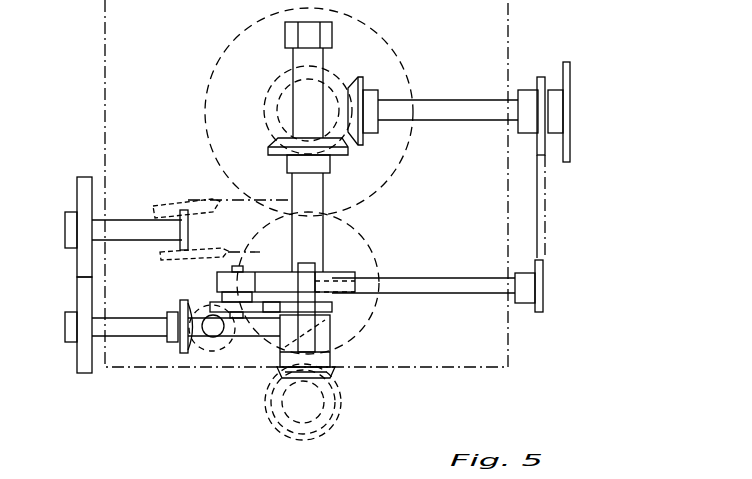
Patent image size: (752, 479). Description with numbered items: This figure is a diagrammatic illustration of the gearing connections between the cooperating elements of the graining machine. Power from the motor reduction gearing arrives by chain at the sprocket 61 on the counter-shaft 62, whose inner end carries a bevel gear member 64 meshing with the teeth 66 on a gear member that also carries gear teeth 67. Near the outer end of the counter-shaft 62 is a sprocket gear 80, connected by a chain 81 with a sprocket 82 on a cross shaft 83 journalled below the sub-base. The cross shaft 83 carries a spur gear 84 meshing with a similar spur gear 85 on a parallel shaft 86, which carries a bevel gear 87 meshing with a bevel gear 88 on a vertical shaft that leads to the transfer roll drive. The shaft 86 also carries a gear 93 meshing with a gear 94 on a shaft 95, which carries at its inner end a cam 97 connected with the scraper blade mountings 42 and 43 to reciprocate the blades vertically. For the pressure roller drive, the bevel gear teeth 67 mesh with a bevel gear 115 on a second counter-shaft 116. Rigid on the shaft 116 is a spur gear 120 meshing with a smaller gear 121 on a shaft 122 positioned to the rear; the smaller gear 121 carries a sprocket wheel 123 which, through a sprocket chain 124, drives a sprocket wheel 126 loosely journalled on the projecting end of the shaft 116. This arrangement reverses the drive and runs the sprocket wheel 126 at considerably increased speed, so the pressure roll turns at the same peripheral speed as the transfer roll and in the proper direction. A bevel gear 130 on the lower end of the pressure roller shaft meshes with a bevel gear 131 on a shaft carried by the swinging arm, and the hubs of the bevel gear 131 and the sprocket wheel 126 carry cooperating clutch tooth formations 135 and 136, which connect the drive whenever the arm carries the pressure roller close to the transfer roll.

The scraper blade mounting 42 is at (175, 208).
The scraper blade mounting 43 is at (160, 256).
The sprocket 61 is at (571, 80).
The counter-shaft 62 is at (440, 104).
The bevel gear member 64 is at (360, 78).
The teeth 66 is at (337, 69).
The gear teeth 67 is at (267, 107).
The sprocket gear 80 is at (542, 80).
The chain 81 is at (546, 197).
The sprocket 82 is at (543, 288).
The cross shaft 83 is at (448, 293).
The spur gear 84 is at (317, 273).
The spur gear 85 is at (317, 337).
The shaft 86 is at (128, 331).
The bevel gear 87 is at (185, 304).
The bevel gear 88 is at (213, 353).
The gear 93 is at (84, 300).
The gear 94 is at (80, 192).
The shaft 95 is at (127, 221).
The cam 97 is at (186, 212).
The bevel gear 115 is at (278, 141).
The counter-shaft 116 is at (313, 191).
The spur gear 120 is at (254, 270).
The smaller gear 121 is at (241, 271).
The shaft 122 is at (239, 265).
The sprocket wheel 123 is at (211, 302).
The sprocket chain 124 is at (267, 310).
The sprocket wheel 126 is at (333, 307).
The bevel gear 130 is at (336, 405).
The bevel gear 131 is at (333, 375).
The clutch tooth formation 135 is at (322, 328).
The clutch tooth formation 136 is at (327, 350).